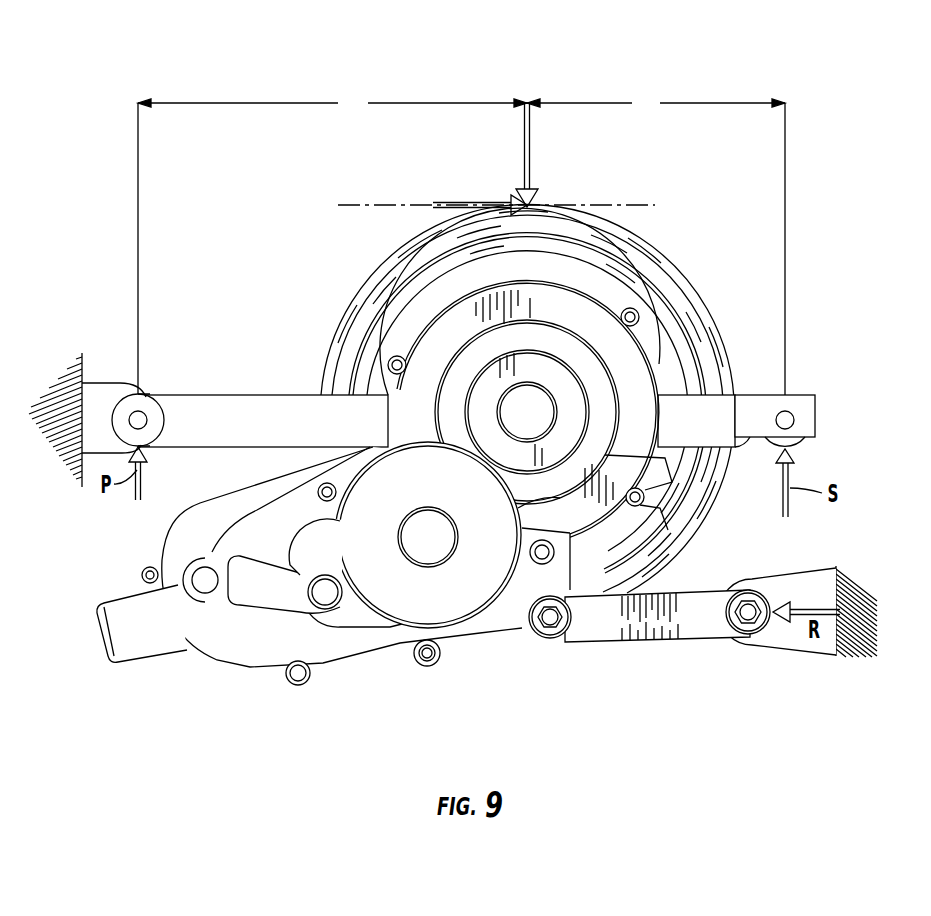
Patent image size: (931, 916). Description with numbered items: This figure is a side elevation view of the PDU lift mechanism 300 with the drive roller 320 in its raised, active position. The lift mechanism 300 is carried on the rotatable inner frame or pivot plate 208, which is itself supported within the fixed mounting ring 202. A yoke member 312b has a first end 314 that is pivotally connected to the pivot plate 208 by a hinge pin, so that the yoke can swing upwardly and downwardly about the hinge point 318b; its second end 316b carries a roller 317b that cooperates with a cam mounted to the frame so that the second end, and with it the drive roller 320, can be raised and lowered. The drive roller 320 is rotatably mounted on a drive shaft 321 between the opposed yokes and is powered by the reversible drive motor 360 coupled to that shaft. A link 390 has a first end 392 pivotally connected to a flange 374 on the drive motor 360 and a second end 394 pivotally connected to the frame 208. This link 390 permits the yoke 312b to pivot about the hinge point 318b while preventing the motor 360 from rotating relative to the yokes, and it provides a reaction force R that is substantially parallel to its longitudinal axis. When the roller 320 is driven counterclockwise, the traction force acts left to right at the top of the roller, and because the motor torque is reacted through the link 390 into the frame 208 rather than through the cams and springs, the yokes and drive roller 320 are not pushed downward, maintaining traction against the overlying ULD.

The PDU lift mechanism 300 is at (608, 66).
The drive roller 320 is at (520, 399).
The drive shaft 321 is at (536, 411).
The hinge point 318b is at (215, 394).
The yoke member 312b is at (213, 448).
The first end of yoke member 314 is at (117, 433).
The second end of yoke member 316b is at (816, 418).
The roller 317b is at (771, 449).
The pivot plate 208 is at (68, 372).
The drive motor 360 is at (216, 665).
The flange 374 is at (522, 630).
The link 390 is at (603, 643).
The first end of link 392 is at (556, 632).
The second end of link 394 is at (752, 590).
The mounting ring 202 is at (775, 652).